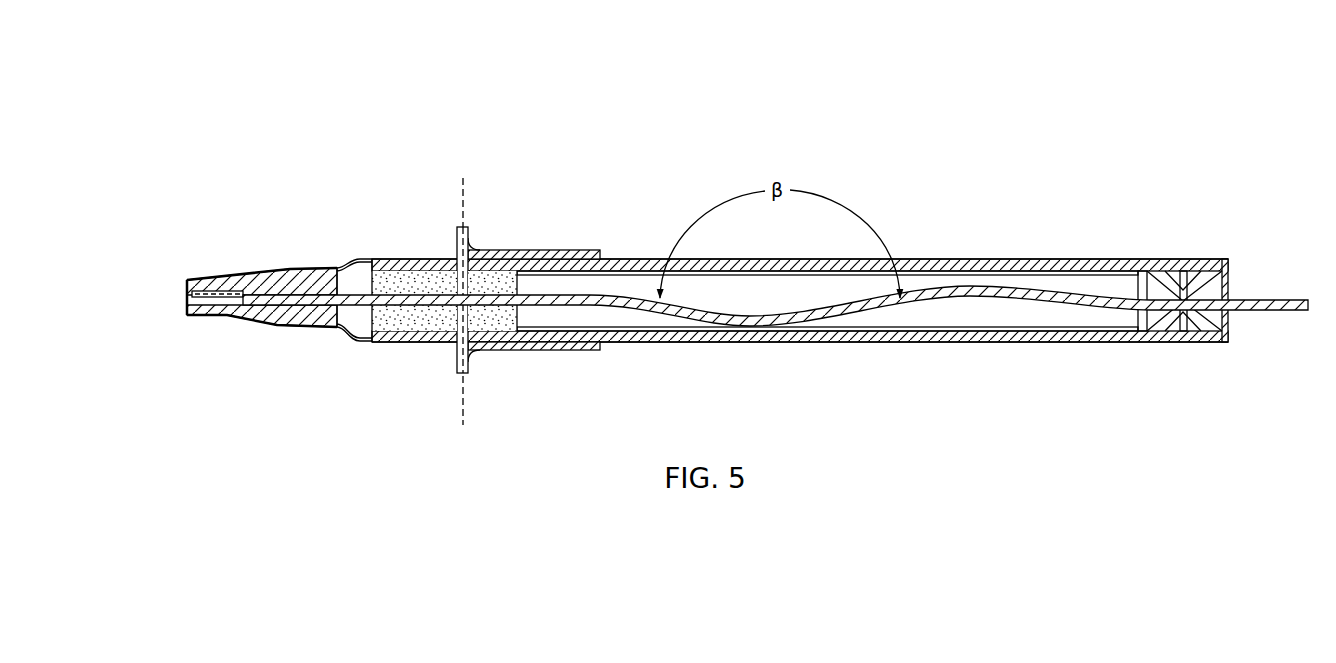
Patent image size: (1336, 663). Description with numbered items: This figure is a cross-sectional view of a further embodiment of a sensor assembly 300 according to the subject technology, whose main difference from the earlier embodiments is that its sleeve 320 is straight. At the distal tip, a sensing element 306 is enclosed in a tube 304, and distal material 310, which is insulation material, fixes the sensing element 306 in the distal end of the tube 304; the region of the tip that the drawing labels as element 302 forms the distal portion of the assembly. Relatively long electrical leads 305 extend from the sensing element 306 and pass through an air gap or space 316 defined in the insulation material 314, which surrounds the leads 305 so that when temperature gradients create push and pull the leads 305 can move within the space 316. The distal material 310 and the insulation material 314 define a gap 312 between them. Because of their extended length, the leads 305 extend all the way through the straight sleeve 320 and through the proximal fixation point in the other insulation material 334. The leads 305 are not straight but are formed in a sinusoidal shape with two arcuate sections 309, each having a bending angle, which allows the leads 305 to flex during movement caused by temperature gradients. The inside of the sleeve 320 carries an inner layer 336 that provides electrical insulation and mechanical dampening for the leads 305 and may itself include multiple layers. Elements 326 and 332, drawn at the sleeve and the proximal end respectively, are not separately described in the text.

The sensor assembly 300 is at (870, 102).
The distal tip 302 is at (227, 327).
The tube 304 is at (306, 330).
The electrical lead 305 is at (294, 295).
The sensing element 306 is at (212, 292).
The arcuate section 309 is at (187, 301).
The distal material 310 is at (262, 284).
The gap 312 is at (352, 313).
The insulation material 314 is at (425, 258).
The space 316 is at (432, 316).
The sleeve 320 is at (420, 342).
The strain relief 326 is at (560, 250).
The spacer 332 is at (1210, 336).
The other insulation material 334 is at (1200, 275).
The inner layer 336 is at (818, 276).